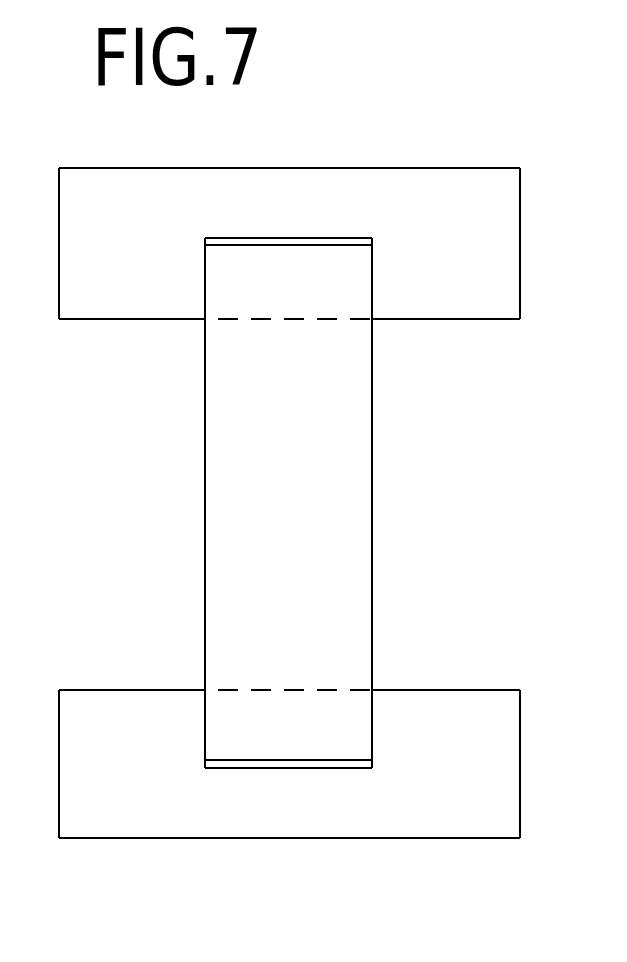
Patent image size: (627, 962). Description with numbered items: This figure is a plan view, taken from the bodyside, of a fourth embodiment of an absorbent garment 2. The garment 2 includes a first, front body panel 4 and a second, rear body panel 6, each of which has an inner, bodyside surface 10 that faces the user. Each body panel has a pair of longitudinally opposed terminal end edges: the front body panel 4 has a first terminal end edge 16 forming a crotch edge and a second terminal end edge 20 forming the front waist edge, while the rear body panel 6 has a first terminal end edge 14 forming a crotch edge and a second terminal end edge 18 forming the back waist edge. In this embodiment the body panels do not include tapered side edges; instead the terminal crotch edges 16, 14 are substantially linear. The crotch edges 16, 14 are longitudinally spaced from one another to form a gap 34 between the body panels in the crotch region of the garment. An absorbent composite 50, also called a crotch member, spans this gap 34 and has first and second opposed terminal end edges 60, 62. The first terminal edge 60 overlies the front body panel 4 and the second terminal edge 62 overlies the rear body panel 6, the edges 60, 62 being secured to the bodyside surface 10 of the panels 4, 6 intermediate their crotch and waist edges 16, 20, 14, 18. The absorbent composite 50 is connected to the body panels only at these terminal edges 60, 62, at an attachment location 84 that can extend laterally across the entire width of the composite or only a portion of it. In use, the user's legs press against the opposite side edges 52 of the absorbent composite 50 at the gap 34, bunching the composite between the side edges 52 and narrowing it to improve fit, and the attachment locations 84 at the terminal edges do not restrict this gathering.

The absorbent garment 2 is at (480, 497).
The first, front body panel 4 is at (492, 797).
The second, rear body panel 6 is at (500, 248).
The inner, bodyside surface 10 is at (451, 247).
The first terminal end edge of rear body panel 14 is at (453, 320).
The first terminal end edge of front body panel 16 is at (425, 690).
The second terminal end edge of rear body panel 18 is at (403, 168).
The second terminal end edge of front body panel 20 is at (486, 838).
The gap 34 is at (175, 487).
The absorbent composite 50 is at (307, 457).
The opposite side edges 52 is at (220, 373).
The first terminal end edge 60 is at (288, 769).
The second terminal end edge 62 is at (276, 237).
The attachment location 84 is at (235, 237).